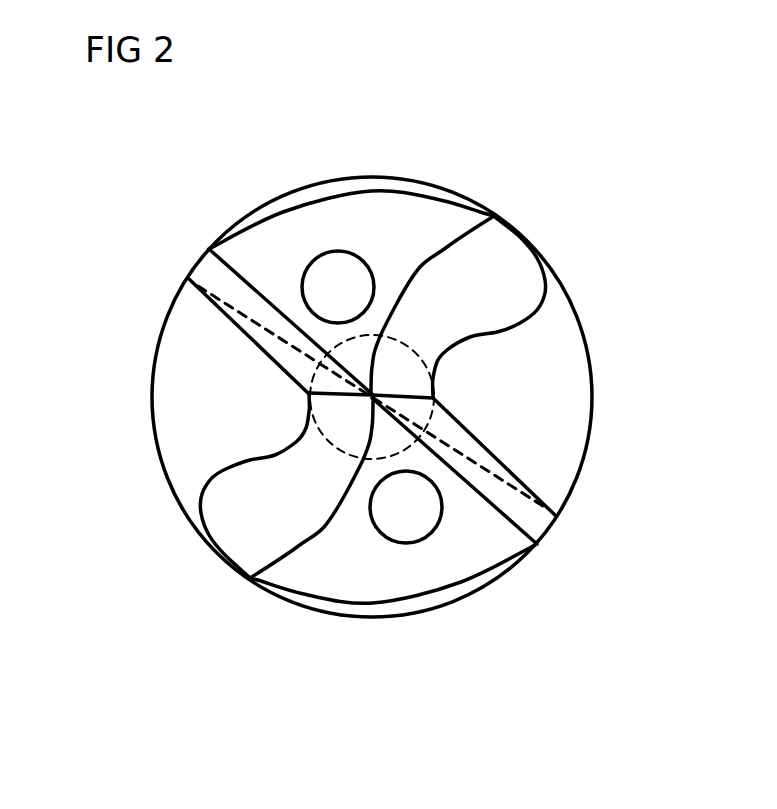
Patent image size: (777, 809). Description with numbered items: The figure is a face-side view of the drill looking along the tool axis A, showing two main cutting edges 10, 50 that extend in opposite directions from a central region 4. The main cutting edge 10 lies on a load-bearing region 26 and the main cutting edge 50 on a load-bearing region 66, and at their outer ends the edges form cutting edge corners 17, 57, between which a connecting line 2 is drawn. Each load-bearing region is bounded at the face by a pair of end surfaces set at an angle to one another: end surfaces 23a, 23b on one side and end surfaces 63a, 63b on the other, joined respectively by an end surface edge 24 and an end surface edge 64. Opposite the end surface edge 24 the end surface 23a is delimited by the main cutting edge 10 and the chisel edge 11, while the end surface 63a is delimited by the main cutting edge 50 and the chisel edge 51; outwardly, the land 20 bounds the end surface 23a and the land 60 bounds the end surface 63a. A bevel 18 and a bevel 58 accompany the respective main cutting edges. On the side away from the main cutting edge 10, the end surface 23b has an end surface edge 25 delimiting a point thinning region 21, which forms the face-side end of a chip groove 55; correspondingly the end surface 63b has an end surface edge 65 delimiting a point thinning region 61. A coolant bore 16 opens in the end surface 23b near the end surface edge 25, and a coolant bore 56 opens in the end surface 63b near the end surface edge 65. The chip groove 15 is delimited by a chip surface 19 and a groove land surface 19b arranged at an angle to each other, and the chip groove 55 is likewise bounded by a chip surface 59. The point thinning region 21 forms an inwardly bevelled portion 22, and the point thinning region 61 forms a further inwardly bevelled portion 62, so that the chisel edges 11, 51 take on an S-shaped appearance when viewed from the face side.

The connecting line 2 is at (205, 258).
The central region 4 is at (290, 443).
The main cutting edge 10 is at (515, 456).
The chisel edge 11 is at (410, 393).
The chip groove 15 is at (535, 393).
The coolant bore 16 is at (406, 508).
The cutting edge corner 17 is at (540, 510).
The bevel 18 is at (195, 260).
The chip surface 19 is at (503, 432).
The groove land surface 19b is at (546, 294).
The land 20 is at (414, 605).
The point thinning region 21 is at (493, 280).
The inwardly bevelled portion 22 is at (420, 393).
The end surface 23a is at (558, 524).
The end surface 23b is at (323, 633).
The end surface edge 24 is at (482, 505).
The end surface edge 25 is at (315, 580).
The load-bearing region 26 is at (362, 563).
The main cutting edge 50 is at (203, 252).
The chisel edge 51 is at (345, 460).
The chip groove 55 is at (126, 458).
The coolant bore 56 is at (337, 284).
The cutting edge corner 57 is at (198, 284).
The bevel 58 is at (488, 212).
The chip surface 59 is at (222, 430).
The land 60 is at (398, 192).
The point thinning region 61 is at (252, 513).
The inwardly bevelled portion 62 is at (315, 366).
The end surface 63a is at (252, 300).
The end surface 63b is at (340, 212).
The end surface edge 64 is at (283, 300).
The end surface edge 65 is at (445, 205).
The load-bearing region 66 is at (330, 138).
The tool axis A is at (422, 355).